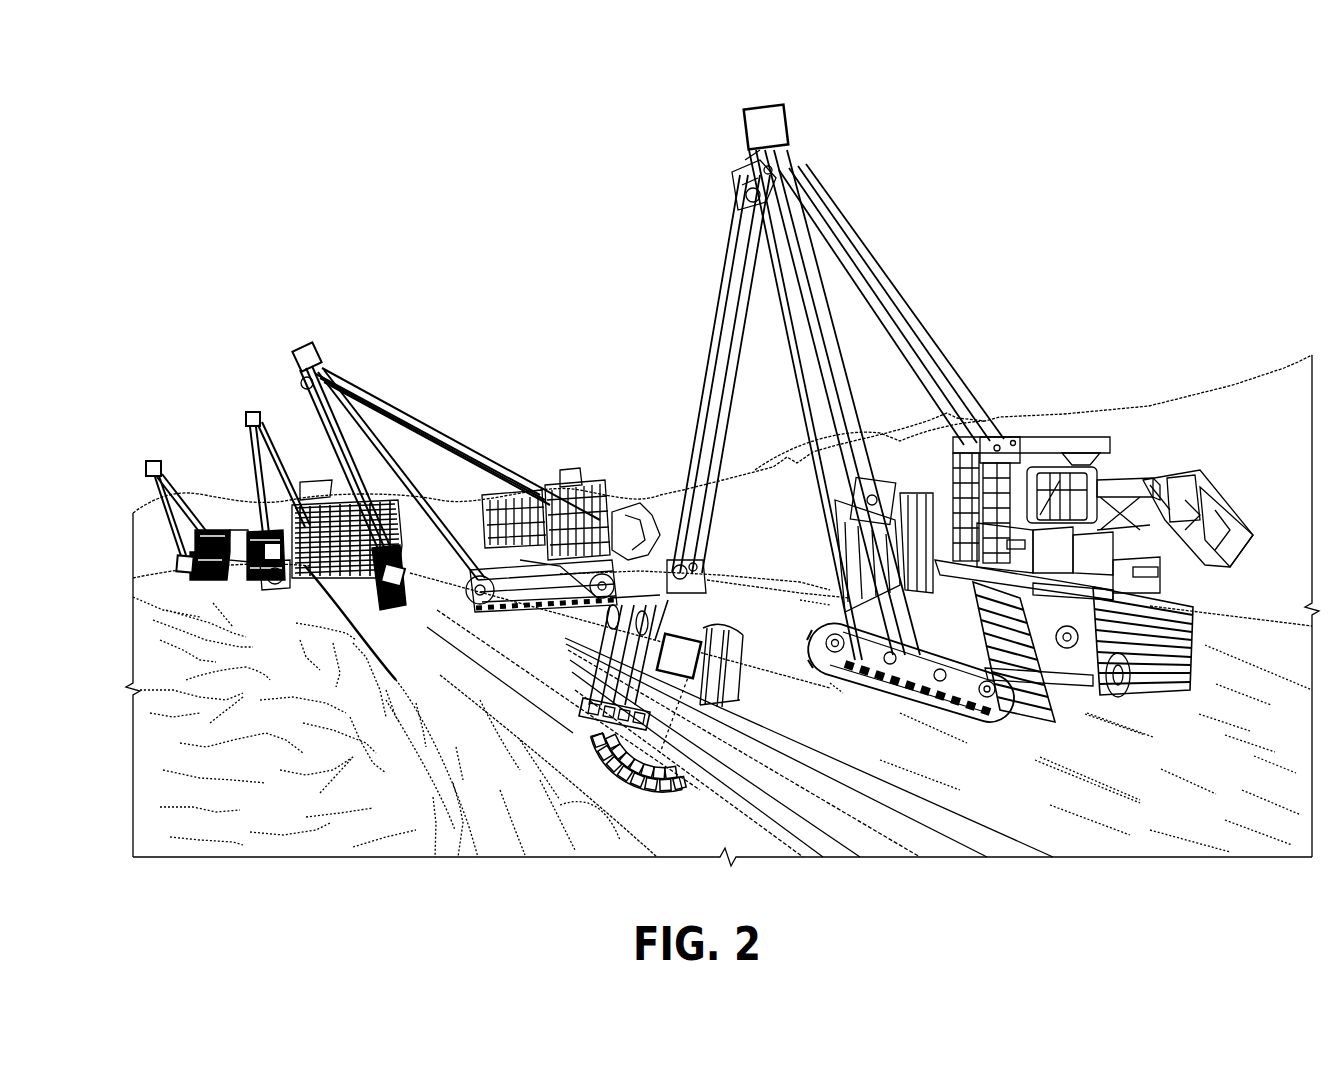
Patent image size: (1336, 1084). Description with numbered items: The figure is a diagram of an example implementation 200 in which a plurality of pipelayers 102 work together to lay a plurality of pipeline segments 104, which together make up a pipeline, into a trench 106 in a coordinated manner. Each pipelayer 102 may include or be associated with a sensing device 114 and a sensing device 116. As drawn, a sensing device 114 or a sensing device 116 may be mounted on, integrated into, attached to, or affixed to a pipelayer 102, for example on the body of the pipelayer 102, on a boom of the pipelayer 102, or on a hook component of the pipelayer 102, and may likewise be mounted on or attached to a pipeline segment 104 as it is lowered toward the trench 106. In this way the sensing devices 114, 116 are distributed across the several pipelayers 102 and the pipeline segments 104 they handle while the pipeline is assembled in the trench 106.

The example implementation 200 is at (176, 61).
The pipelayer 102 is at (209, 528).
The pipeline segment 104 is at (483, 645).
The trench 106 is at (482, 843).
The sensing device 114 is at (175, 428).
The sensing device 116 is at (195, 568).